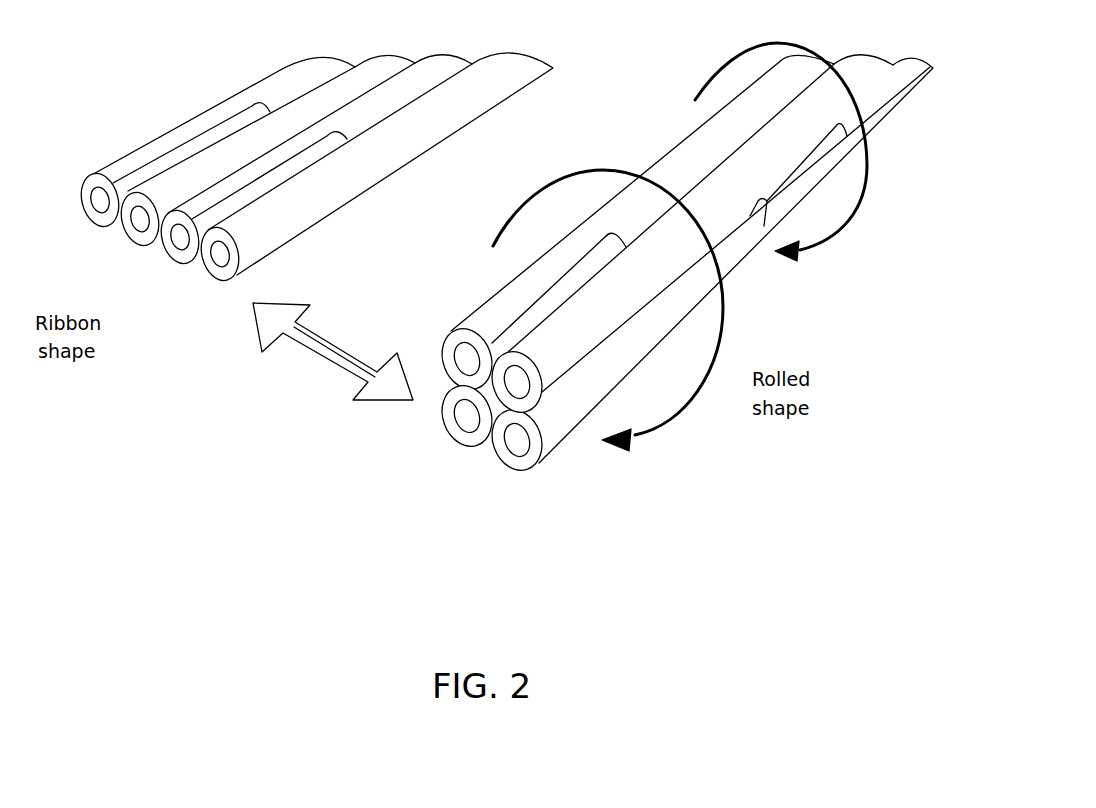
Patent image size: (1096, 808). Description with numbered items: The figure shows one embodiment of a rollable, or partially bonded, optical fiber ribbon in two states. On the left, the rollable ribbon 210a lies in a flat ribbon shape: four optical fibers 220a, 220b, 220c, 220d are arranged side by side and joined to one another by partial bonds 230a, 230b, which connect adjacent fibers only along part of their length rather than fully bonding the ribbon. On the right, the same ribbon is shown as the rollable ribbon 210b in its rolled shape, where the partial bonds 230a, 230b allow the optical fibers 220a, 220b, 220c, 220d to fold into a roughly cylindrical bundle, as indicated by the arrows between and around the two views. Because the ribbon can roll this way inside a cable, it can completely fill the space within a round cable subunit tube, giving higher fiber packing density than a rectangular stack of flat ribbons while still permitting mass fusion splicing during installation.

The rollable ribbon (ribbon shape) 210a is at (150, 400).
The rollable ribbon (rolled shape) 210b is at (390, 468).
The optical fiber 220a is at (86, 218).
The optical fiber 220b is at (129, 242).
The optical fiber 220c is at (173, 263).
The optical fiber 220d is at (217, 281).
The partial bond 230a is at (205, 138).
The partial bond 230b is at (327, 143).